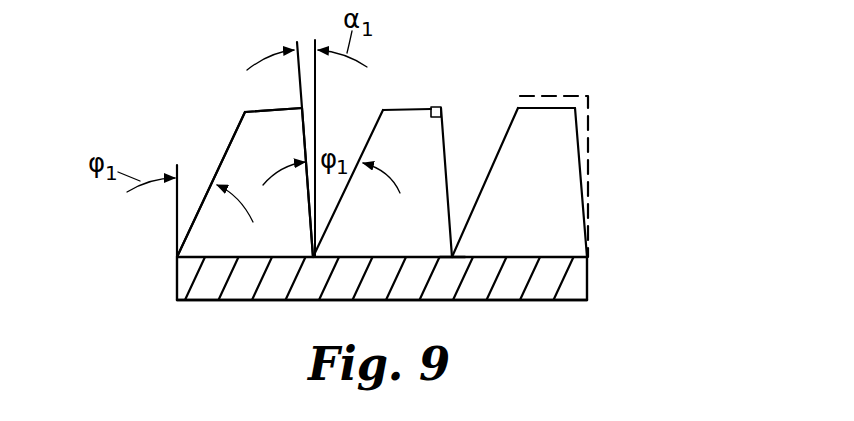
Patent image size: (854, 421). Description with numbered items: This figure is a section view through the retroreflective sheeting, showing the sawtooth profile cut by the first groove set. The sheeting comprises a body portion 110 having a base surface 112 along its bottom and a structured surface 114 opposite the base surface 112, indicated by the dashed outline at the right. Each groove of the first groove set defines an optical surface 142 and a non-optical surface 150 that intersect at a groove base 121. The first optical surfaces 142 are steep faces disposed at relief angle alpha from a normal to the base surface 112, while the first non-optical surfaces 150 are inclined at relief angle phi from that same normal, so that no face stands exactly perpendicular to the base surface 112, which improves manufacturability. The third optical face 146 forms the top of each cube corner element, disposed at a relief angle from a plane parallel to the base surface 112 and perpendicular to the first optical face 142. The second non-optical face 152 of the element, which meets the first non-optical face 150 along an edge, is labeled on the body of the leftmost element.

The body portion 110 is at (580, 275).
The base surface 112 is at (559, 301).
The structured surface 114 is at (600, 125).
The groove base 121 is at (453, 253).
The first optical surface 142 is at (305, 125).
The third optical face 146 is at (253, 110).
The first non-optical surface 150 is at (228, 145).
The second non-optical face 152 is at (291, 144).